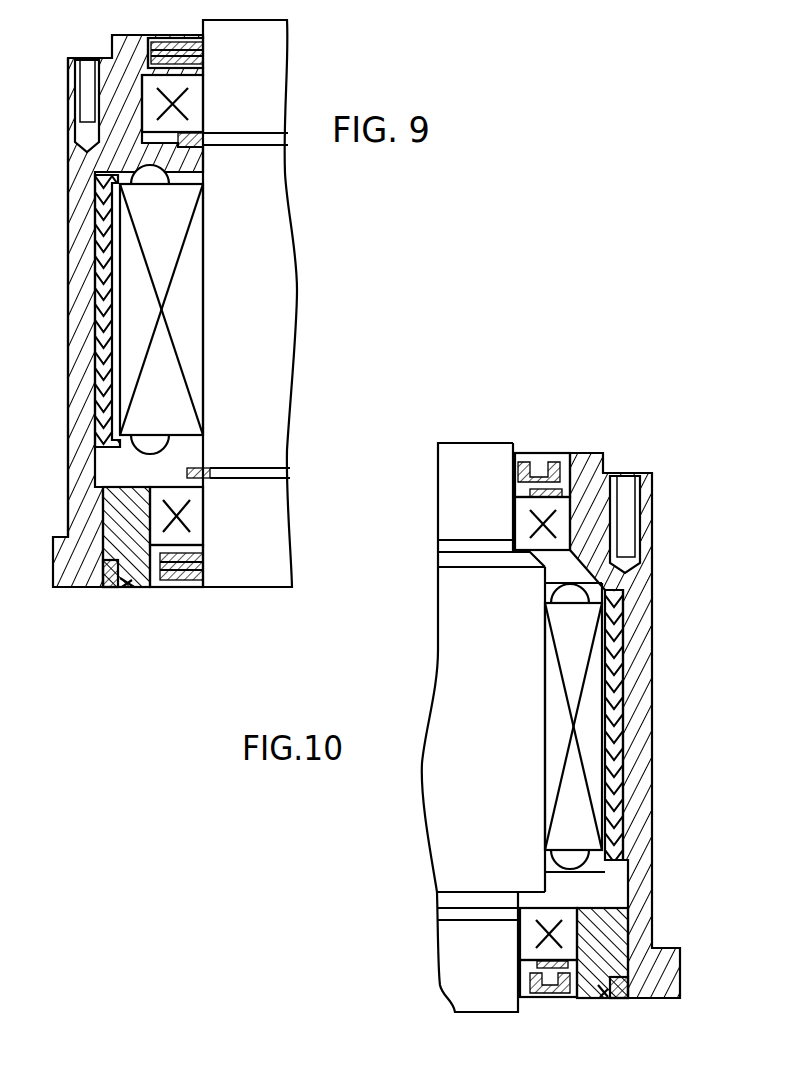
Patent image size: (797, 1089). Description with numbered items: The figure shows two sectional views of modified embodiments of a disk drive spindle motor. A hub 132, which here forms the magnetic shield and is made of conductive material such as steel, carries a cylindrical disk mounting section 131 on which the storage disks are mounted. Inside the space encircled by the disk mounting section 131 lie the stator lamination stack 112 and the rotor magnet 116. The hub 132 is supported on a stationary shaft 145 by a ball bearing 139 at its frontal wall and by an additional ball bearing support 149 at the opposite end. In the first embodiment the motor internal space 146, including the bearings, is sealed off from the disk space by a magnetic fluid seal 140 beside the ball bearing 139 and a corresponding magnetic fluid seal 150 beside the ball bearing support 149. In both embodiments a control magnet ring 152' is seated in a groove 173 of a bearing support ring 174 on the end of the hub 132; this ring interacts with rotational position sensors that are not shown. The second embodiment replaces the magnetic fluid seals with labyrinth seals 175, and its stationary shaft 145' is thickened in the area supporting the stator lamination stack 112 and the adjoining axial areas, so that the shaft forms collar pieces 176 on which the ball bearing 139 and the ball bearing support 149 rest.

In FIG. 9, the stator lamination stack 112 is at (120, 222).
In FIG. 10, the stator lamination stack 112 is at (585, 645).
In FIG. 9, the rotor magnet 116 is at (100, 283).
In FIG. 10, the rotor magnet 116 is at (620, 708).
In FIG. 9, the disk mounting section 131 is at (68, 186).
In FIG. 9, the hub 132 is at (90, 378).
In FIG. 9, the ball bearing 139 is at (190, 100).
In FIG. 10, the ball bearing 139 is at (602, 455).
In FIG. 9, the magnetic fluid seal 140 is at (165, 45).
In FIG. 9, the stationary shaft 145 is at (277, 303).
In FIG. 10, the stationary shaft 145' is at (455, 727).
In FIG. 9, the internal space 146 is at (197, 457).
In FIG. 10, the internal space 146 is at (617, 880).
In FIG. 9, the ball bearing support 149 is at (206, 512).
In FIG. 10, the ball bearing support 149 is at (524, 937).
In FIG. 9, the magnetic fluid seal 150 is at (178, 580).
In FIG. 9, the control magnet ring 152' is at (91, 593).
In FIG. 10, the control magnet ring 152' is at (620, 1020).
In FIG. 9, the groove 173 is at (136, 582).
In FIG. 10, the groove 173 is at (603, 992).
In FIG. 9, the bearing support ring 174 is at (103, 500).
In FIG. 10, the bearing support ring 174 is at (625, 932).
In FIG. 10, the labyrinth seals 175 is at (548, 465).
In FIG. 10, the collar pieces 176 is at (530, 555).